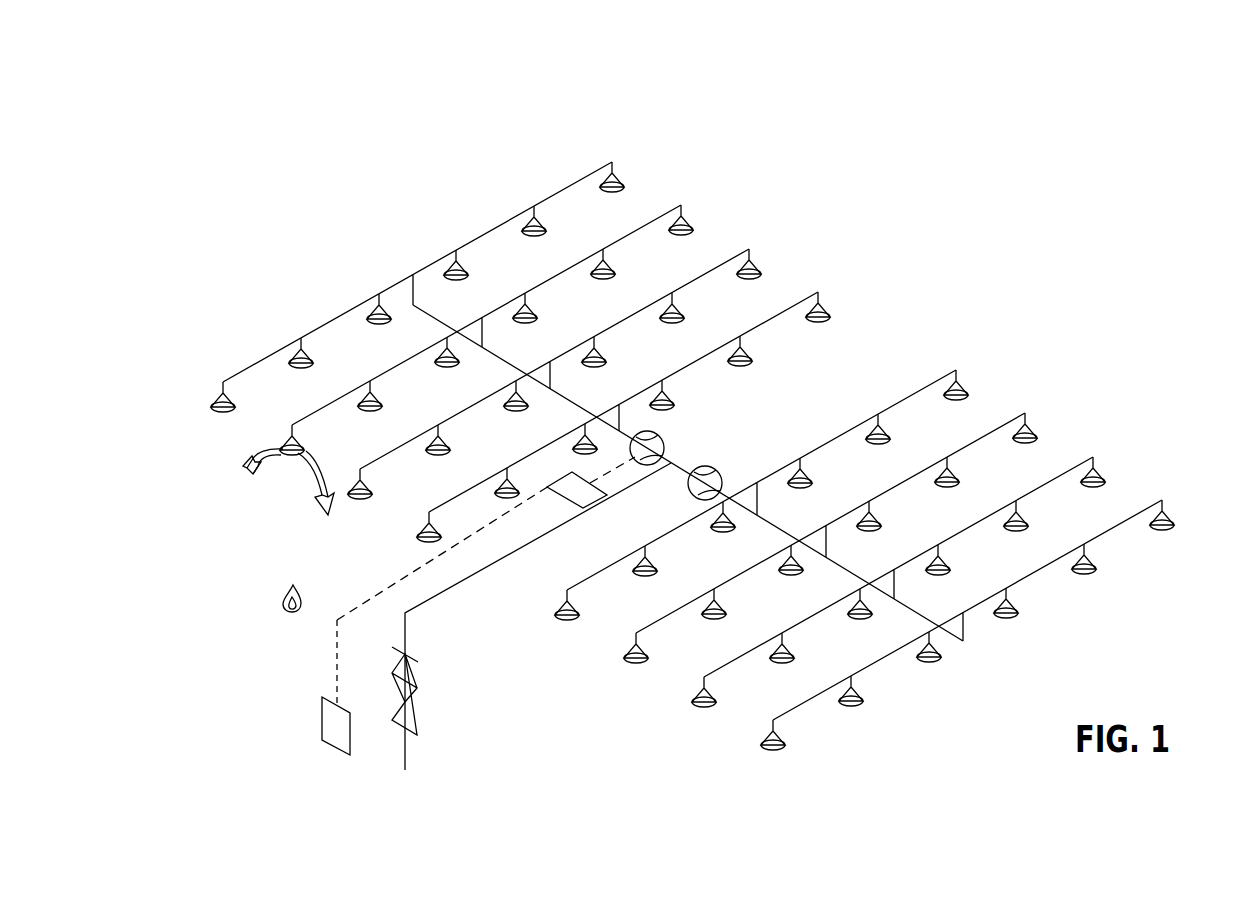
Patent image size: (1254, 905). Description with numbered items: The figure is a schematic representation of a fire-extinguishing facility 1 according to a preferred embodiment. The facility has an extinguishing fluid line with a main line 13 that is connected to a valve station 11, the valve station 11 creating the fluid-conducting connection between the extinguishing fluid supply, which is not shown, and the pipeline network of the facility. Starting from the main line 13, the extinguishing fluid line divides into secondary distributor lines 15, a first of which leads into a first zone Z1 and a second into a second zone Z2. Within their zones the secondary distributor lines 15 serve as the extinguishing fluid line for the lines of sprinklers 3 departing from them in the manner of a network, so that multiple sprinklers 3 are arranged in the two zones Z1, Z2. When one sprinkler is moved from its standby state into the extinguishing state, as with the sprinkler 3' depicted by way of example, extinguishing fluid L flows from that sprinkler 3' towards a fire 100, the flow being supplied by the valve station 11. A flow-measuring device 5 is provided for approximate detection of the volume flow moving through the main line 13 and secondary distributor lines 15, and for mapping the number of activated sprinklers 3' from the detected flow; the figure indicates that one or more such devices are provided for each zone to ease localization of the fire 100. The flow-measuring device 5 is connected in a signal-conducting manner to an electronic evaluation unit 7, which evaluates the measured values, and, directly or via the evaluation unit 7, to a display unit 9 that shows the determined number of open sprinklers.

The fire-extinguishing facility 1 is at (300, 206).
The sprinkler 3 is at (692, 456).
The activated sprinkler 3' is at (242, 440).
The flow-measuring device 5 is at (667, 436).
The electronic evaluation unit 7 is at (568, 477).
The display unit 9 is at (324, 698).
The valve station 11 is at (416, 697).
The main line 13 is at (473, 578).
The secondary distributor line 15 is at (576, 403).
The fire 100 is at (280, 596).
The extinguishing fluid L is at (265, 463).
The first zone Z1 is at (900, 230).
The second zone Z2 is at (1215, 425).